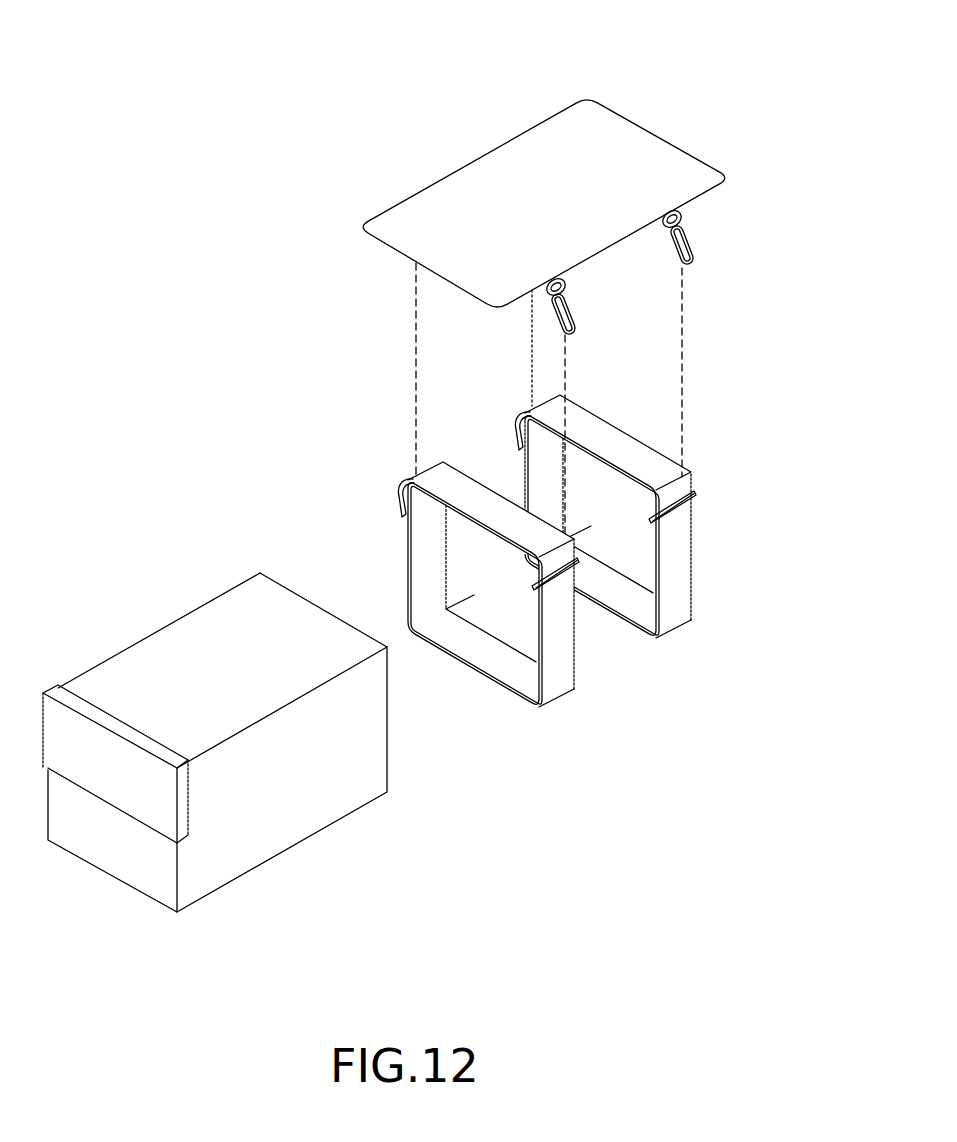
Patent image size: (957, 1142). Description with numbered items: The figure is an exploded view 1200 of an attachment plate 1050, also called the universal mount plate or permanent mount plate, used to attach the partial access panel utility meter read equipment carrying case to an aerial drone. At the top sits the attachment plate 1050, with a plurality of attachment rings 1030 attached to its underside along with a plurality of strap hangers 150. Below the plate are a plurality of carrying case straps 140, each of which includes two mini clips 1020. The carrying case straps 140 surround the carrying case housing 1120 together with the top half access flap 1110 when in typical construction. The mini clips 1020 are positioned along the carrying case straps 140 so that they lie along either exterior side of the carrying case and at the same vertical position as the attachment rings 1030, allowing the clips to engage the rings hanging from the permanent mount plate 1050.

The exploded view 1200 is at (176, 112).
The attachment plate 1050 is at (682, 155).
The attachment rings 1030 is at (688, 218).
The strap hangers 150 is at (690, 258).
The mini clips 1020 is at (522, 442).
The carrying case straps 140 is at (688, 578).
The top half access flap 1110 is at (118, 730).
The carrying case housing 1120 is at (290, 832).